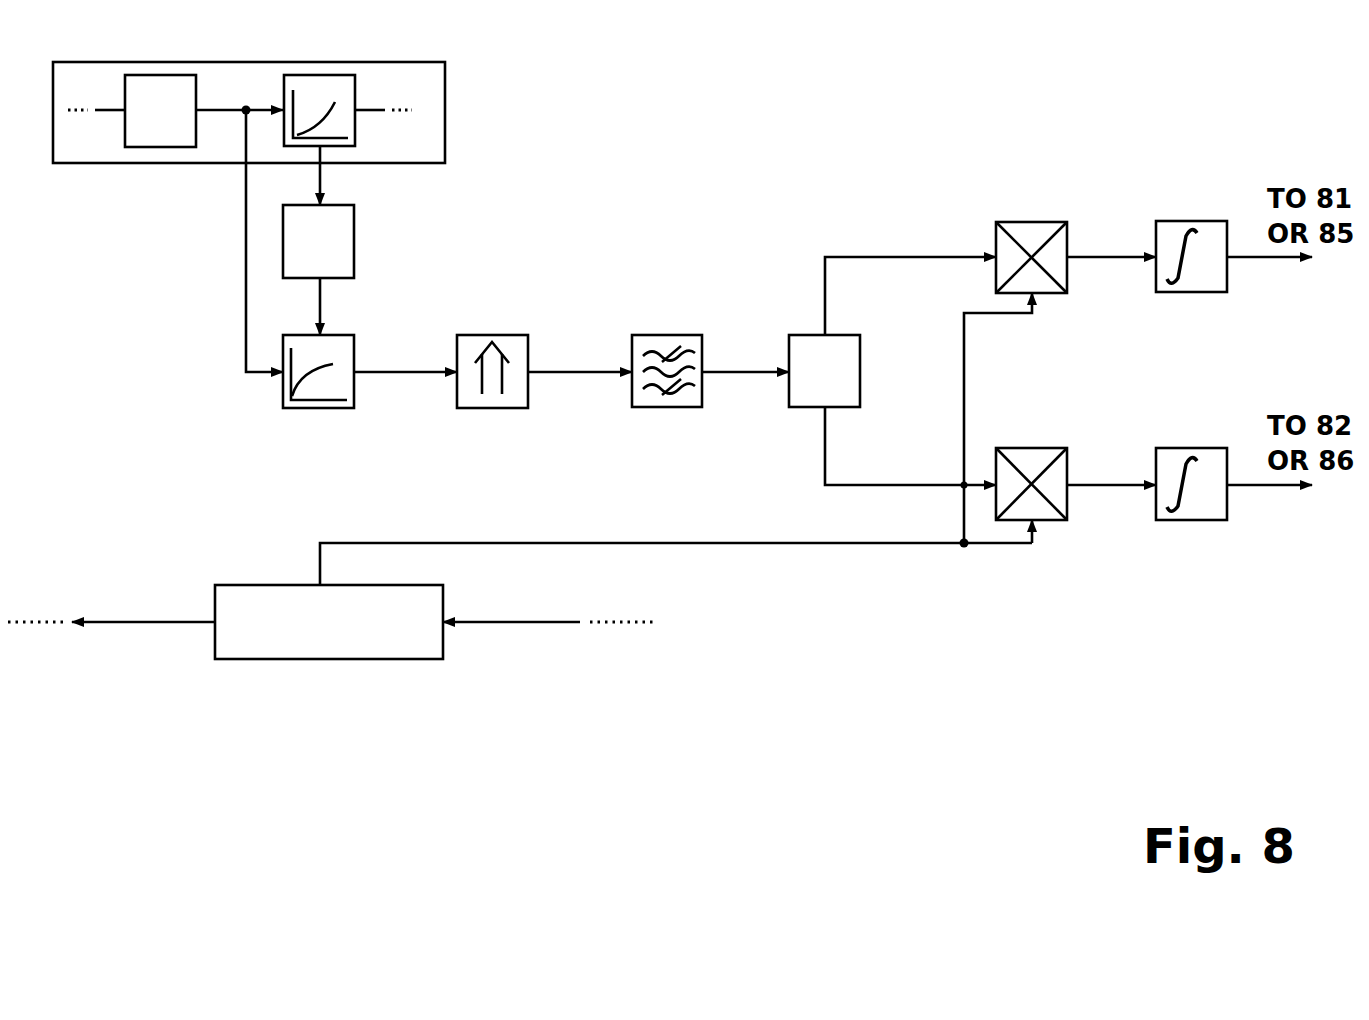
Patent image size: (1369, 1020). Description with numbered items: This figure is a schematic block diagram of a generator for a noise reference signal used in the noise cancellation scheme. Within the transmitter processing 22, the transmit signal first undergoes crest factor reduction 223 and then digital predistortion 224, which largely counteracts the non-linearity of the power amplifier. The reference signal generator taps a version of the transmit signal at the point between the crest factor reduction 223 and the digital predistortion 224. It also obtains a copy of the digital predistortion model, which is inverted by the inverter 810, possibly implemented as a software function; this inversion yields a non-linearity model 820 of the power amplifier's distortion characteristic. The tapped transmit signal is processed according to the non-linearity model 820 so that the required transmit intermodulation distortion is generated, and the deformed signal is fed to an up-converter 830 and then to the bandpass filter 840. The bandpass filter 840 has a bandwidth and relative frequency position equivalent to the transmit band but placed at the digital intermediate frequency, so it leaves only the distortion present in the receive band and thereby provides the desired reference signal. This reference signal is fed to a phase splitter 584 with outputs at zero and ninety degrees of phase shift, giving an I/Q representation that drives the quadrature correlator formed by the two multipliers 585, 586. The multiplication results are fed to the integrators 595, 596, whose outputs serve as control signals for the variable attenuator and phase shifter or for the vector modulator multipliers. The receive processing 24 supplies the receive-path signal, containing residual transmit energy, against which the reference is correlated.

The transmitter processing 22 is at (445, 78).
The crest factor reduction 223 is at (147, 75).
The digital predistortion 224 is at (307, 75).
The inverter 810 is at (354, 258).
The non-linearity model 820 is at (354, 388).
The up-converter 830 is at (528, 388).
The bandpass filter 840 is at (702, 388).
The phase splitter 584 is at (860, 395).
The multiplier 586 is at (1067, 285).
The integrator 596 is at (1227, 285).
The multiplier 585 is at (1067, 510).
The integrator 595 is at (1227, 510).
The receive processing 24 is at (443, 648).